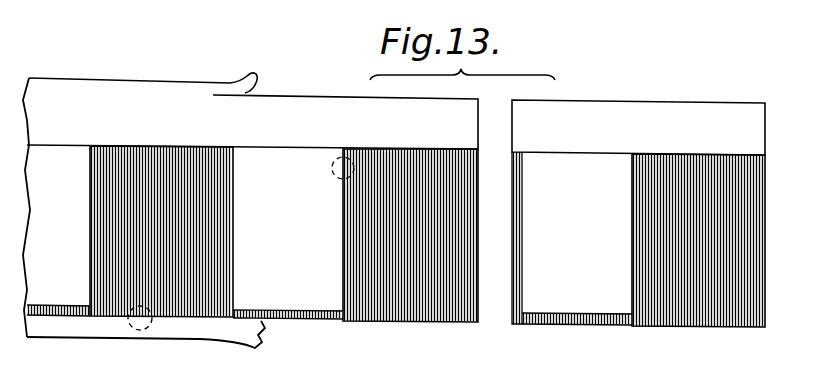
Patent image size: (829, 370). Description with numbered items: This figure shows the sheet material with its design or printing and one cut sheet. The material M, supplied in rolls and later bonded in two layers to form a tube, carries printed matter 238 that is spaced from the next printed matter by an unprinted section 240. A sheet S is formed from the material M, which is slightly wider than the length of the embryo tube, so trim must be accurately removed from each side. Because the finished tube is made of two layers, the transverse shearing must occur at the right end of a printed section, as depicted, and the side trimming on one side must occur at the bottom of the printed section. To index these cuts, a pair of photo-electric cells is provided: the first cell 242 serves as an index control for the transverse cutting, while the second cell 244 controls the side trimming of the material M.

The material M is at (288, 108).
The sheet S is at (661, 111).
The printed matter 238 is at (702, 318).
The unprinted section 240 is at (570, 303).
The photo-electric cell 242 is at (338, 157).
The photo-electric cell 244 is at (137, 331).